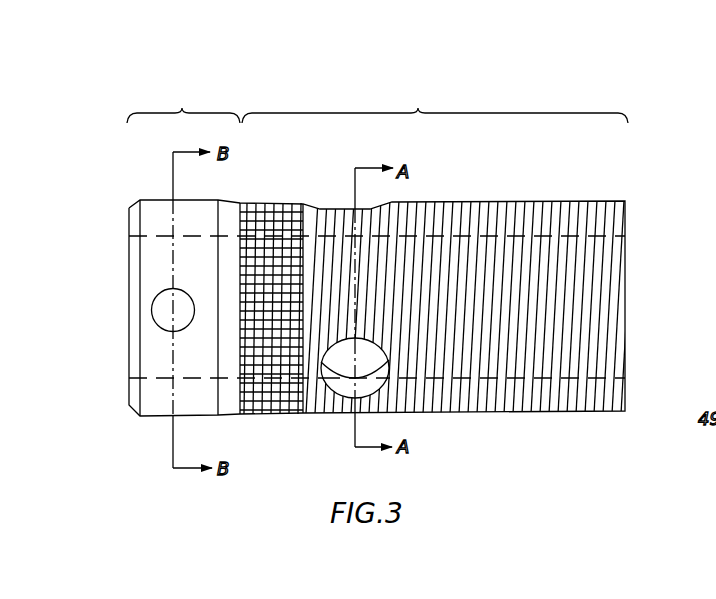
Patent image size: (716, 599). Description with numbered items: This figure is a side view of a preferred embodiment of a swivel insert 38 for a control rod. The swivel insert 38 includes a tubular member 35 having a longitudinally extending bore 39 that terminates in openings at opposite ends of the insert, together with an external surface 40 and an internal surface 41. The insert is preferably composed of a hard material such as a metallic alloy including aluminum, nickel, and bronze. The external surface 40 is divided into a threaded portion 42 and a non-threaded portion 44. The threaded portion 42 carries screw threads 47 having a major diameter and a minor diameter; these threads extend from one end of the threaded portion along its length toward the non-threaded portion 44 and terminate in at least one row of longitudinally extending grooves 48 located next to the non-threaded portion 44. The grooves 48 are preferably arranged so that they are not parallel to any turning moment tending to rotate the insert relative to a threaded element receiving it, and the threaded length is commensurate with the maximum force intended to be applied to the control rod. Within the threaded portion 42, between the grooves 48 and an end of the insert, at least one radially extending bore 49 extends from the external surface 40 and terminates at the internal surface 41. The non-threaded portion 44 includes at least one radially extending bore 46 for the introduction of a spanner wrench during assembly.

The tubular member 35 is at (128, 227).
The swivel insert 38 is at (542, 454).
The longitudinally extending bore 39 is at (626, 256).
The external surface 40 is at (568, 411).
The internal surface 41 is at (583, 375).
The threaded portion 42 is at (418, 108).
The non-threaded portion 44 is at (182, 108).
The radially extending bore 46 is at (163, 313).
The screw threads 47 is at (571, 201).
The longitudinally extending grooves 48 is at (268, 414).
The radially extending bore 49 is at (373, 362).